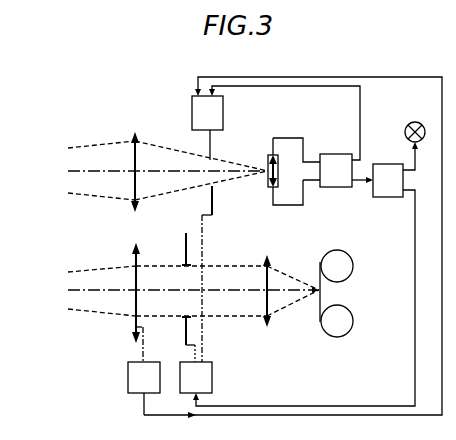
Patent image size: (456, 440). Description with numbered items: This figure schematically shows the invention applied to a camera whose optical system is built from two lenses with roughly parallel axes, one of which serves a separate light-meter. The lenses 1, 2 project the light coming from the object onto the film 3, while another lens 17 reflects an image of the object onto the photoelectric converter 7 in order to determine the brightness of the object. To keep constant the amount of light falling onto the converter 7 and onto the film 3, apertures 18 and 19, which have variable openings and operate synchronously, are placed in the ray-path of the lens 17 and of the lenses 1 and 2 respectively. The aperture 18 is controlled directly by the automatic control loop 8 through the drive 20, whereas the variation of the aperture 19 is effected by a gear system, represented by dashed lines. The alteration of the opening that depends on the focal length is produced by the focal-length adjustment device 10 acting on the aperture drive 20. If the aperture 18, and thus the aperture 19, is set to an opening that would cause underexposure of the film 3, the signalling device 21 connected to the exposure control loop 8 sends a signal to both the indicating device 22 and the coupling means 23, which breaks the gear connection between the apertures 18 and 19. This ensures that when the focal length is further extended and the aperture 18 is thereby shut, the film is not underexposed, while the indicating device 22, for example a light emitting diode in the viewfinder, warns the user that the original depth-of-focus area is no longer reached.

The lens 1 is at (133, 322).
The lens 2 is at (264, 311).
The film 3 is at (320, 310).
The photoelectric converter 7 is at (268, 165).
The automatic control loop 8 is at (336, 170).
The focal-length adjustment device 10 is at (144, 388).
The lens 17 is at (133, 148).
The aperture 18 is at (212, 198).
The aperture 19 is at (186, 248).
The aperture drive 20 is at (293, 247).
The signalling device 21 is at (377, 180).
The indicating device 22 is at (409, 124).
The coupling means 23 is at (297, 298).